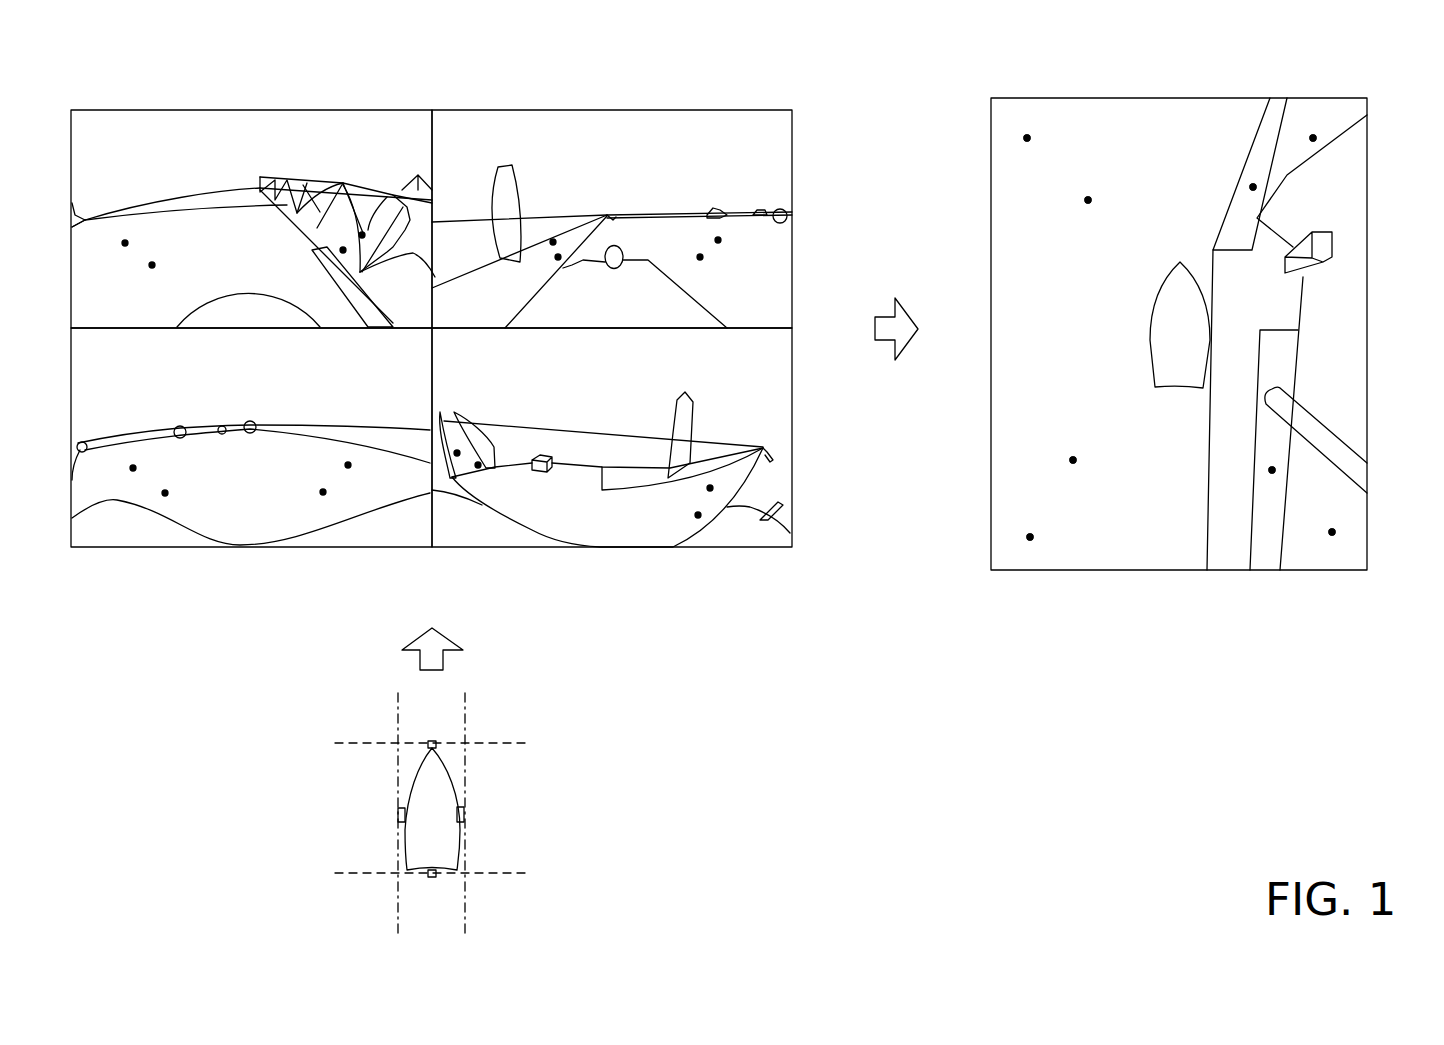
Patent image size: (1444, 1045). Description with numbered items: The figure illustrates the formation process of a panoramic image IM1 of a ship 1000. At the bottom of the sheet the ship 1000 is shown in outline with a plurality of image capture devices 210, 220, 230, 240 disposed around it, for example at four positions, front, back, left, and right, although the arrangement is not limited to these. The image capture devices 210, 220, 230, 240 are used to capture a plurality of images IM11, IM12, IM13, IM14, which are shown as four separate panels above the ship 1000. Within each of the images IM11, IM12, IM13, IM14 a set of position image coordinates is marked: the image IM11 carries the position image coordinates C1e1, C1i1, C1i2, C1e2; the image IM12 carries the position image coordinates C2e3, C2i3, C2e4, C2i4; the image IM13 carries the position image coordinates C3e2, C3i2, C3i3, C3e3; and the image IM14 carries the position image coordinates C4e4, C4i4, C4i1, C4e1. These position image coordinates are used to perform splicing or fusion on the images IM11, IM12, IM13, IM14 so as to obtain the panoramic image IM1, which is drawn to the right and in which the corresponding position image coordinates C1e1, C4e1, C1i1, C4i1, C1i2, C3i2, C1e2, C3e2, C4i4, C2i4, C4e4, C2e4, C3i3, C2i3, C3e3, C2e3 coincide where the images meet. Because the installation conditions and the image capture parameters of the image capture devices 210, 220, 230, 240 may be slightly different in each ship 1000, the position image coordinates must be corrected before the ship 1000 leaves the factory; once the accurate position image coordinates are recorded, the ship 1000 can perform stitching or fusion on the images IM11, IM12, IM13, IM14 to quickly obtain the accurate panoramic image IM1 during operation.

The image IM11 is at (227, 110).
The image IM12 is at (610, 108).
The image IM13 is at (608, 547).
The image IM14 is at (237, 550).
The panoramic image IM1 is at (1163, 103).
The position image coordinate C1e1 is at (125, 243).
The position image coordinate C1i1 is at (152, 265).
The position image coordinate C1i2 is at (343, 250).
The position image coordinate C1e2 is at (362, 235).
The position image coordinate C2e3 is at (553, 242).
The position image coordinate C2i3 is at (558, 257).
The position image coordinate C2e4 is at (718, 240).
The position image coordinate C2i4 is at (700, 257).
The position image coordinate C3e2 is at (457, 453).
The position image coordinate C3i2 is at (478, 465).
The position image coordinate C3i3 is at (698, 515).
The position image coordinate C3e3 is at (710, 488).
The position image coordinate C4e4 is at (133, 468).
The position image coordinate C4i4 is at (165, 493).
The position image coordinate C4i1 is at (323, 492).
The position image coordinate C4e1 is at (348, 465).
The image capture device 210 is at (433, 741).
The image capture device 220 is at (430, 877).
The image capture device 230 is at (465, 813).
The image capture device 240 is at (398, 813).
The ship 1000 is at (462, 850).